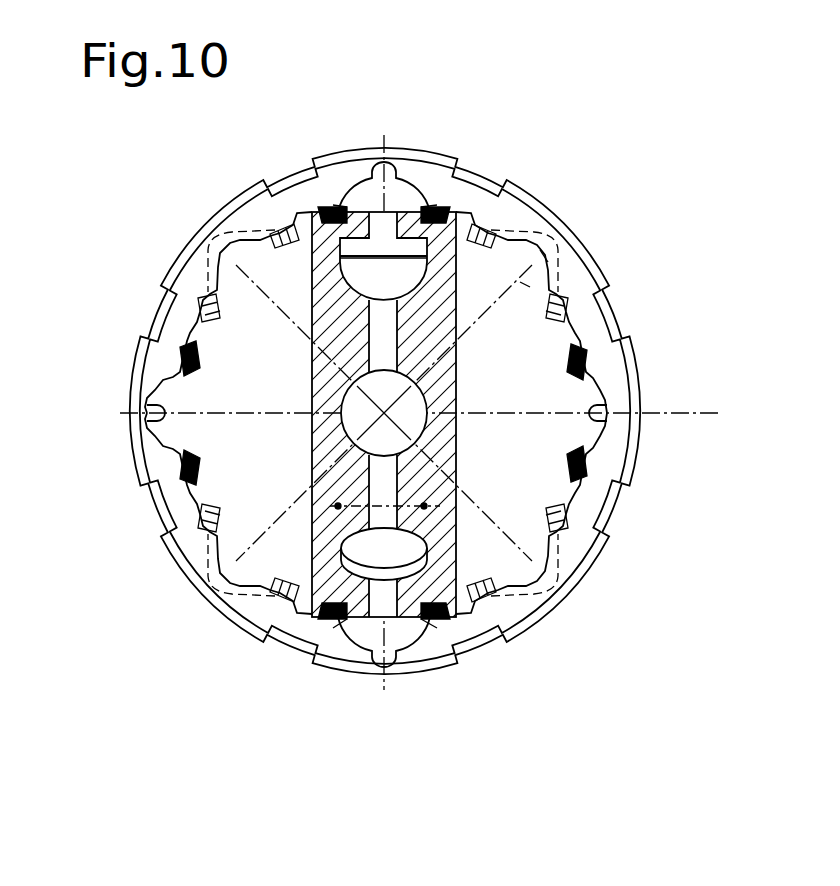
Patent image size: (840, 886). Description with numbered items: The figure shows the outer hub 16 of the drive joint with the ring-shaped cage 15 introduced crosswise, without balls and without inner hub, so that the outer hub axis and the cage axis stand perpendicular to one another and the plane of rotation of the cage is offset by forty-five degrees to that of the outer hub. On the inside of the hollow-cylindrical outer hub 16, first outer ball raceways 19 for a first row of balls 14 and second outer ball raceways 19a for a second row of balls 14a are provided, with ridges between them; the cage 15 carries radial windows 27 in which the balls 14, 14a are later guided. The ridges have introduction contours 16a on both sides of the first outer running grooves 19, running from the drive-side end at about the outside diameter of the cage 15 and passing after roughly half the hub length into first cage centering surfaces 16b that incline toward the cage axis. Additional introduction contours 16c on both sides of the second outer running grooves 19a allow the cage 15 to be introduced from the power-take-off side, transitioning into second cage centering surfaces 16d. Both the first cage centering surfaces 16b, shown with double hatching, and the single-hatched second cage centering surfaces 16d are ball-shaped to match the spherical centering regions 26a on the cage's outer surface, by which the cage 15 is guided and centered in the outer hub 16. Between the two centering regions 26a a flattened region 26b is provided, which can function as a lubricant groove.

The first row of balls 14 is at (393, 200).
The second row of balls 14a is at (530, 287).
The cage 15 is at (452, 448).
The outer hub 16 is at (587, 337).
The introduction contours 16a is at (333, 205).
The first cage centering surfaces 16b is at (318, 207).
The additional introduction contours 16c is at (492, 232).
The second cage centering surfaces 16d is at (550, 240).
The first outer ball raceways 19 is at (363, 187).
The second outer ball raceways 19a is at (548, 262).
The centering regions 26a is at (335, 505).
The flattened region 26b is at (387, 608).
The radial windows 27 is at (408, 253).